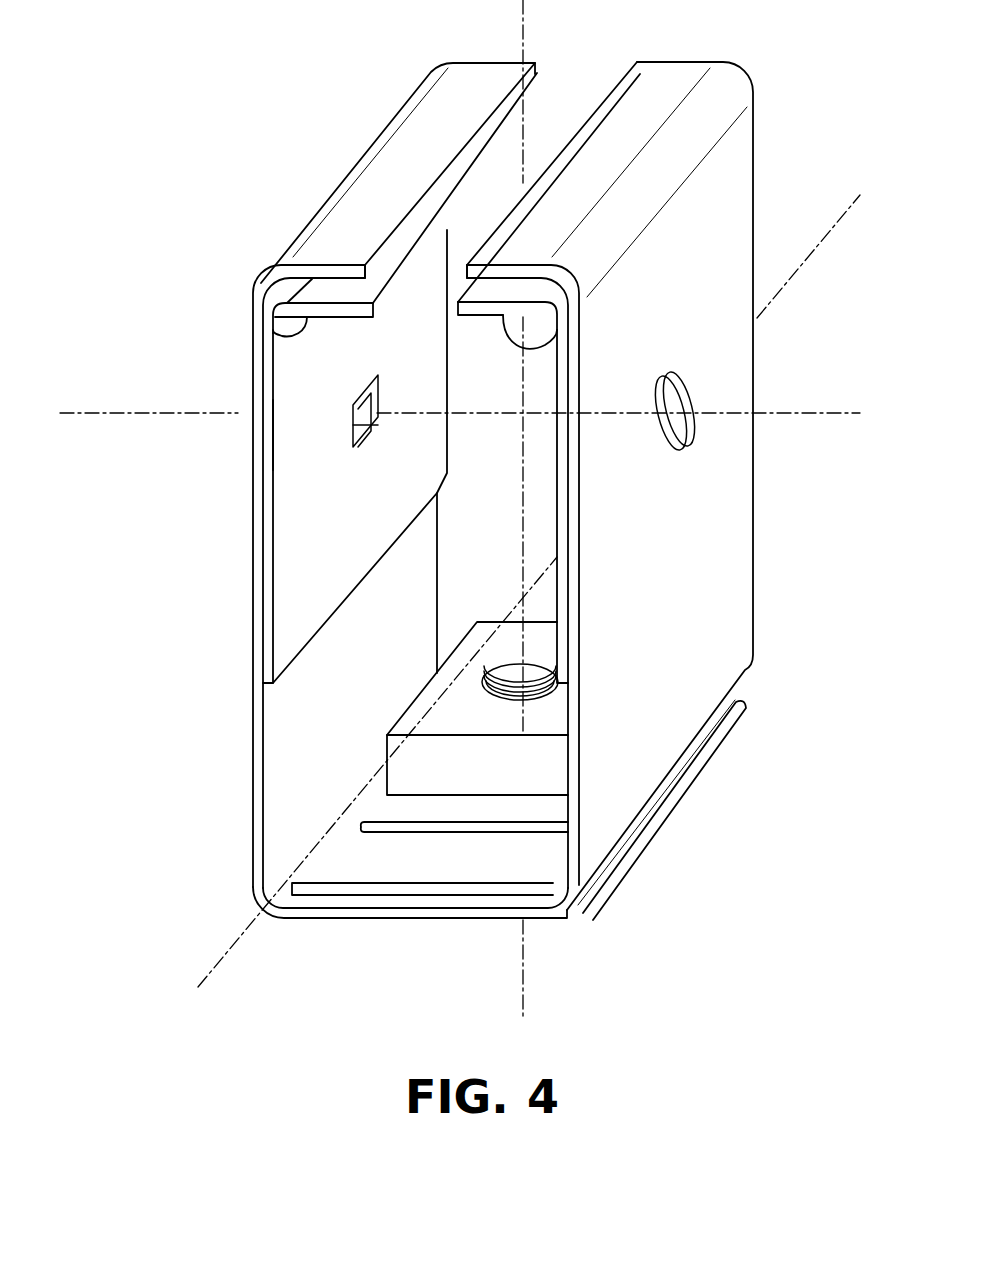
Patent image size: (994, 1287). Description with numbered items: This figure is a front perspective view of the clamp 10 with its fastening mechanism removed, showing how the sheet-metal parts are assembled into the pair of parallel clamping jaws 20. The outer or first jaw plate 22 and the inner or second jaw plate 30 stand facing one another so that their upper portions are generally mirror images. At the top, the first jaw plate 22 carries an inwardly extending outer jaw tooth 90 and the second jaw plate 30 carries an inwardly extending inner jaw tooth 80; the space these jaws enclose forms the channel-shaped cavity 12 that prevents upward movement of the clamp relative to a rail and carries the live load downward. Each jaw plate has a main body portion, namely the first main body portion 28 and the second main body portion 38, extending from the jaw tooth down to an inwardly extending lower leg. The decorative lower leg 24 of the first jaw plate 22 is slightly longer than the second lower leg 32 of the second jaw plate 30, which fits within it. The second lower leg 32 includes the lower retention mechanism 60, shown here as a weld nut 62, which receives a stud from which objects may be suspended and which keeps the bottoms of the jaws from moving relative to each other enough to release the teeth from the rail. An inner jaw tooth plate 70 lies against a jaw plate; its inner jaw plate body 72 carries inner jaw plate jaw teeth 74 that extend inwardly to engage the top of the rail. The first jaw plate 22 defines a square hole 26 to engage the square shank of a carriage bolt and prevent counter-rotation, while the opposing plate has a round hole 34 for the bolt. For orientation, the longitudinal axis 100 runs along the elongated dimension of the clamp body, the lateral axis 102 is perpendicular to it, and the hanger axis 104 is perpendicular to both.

The clamp 10 is at (134, 903).
The channel-shaped cavity 12 is at (340, 290).
The parallel clamping jaws 20 is at (268, 627).
The first jaw plate 22 is at (285, 700).
The decorative lower leg 24 is at (442, 920).
The square hole 26 is at (353, 413).
The first main body portion 28 is at (327, 690).
The second jaw plate 30 is at (654, 753).
The second lower leg 32 is at (520, 858).
The round hole 34 is at (690, 398).
The second main body portion 38 is at (690, 630).
The lower retention mechanism 60 is at (425, 772).
The weld nut 62 is at (523, 698).
The inner jaw tooth plate 70 is at (315, 515).
The inner jaw plate body 72 is at (293, 455).
The inner jaw plate jaw teeth 74 is at (278, 322).
The inner jaw tooth 80 is at (653, 85).
The outer jaw tooth 90 is at (411, 141).
The longitudinal axis 100 is at (235, 943).
The lateral axis 102 is at (822, 415).
The hanger axis 104 is at (528, 963).